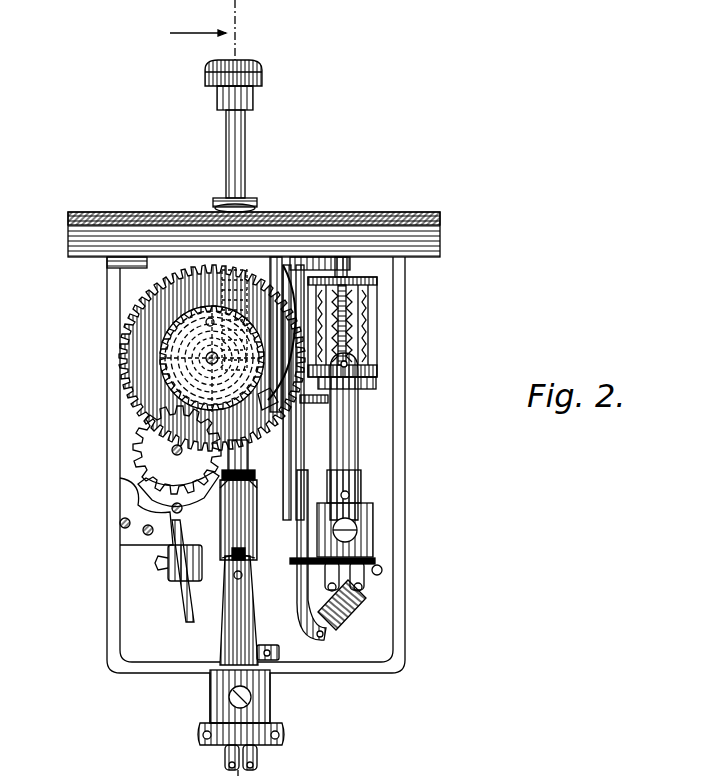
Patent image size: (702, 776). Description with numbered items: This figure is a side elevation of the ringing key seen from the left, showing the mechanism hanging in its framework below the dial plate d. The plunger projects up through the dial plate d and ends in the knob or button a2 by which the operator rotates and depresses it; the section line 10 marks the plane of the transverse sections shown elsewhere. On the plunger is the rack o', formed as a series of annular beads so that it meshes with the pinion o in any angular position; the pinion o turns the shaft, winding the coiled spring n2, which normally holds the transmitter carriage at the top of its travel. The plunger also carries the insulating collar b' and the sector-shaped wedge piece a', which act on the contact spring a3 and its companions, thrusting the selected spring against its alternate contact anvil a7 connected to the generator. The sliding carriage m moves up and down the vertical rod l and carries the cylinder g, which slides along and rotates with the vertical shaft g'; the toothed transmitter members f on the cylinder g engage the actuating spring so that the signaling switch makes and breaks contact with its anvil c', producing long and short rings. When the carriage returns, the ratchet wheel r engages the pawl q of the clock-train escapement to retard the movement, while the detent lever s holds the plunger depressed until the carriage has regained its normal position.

The section line 10— 10 is at (213, 30).
The knob or button a2 is at (244, 136).
The dial plate d is at (437, 212).
The coiled spring n2 is at (212, 358).
The pinion o is at (212, 359).
The rack o' is at (221, 320).
The ratchet wheel r is at (170, 420).
The sector-shaped wedge piece a' is at (178, 547).
The insulating collar b' is at (253, 500).
The contact spring a3 is at (250, 578).
The alternate contact anvil a7 is at (232, 618).
The sliding carriage m is at (283, 260).
The pawl q is at (262, 404).
The vertical rod l is at (262, 462).
The vertical shaft g' is at (358, 230).
The transmitter members f is at (377, 320).
The cylinder g is at (339, 397).
The anvil c' is at (354, 455).
The detent lever s is at (297, 612).